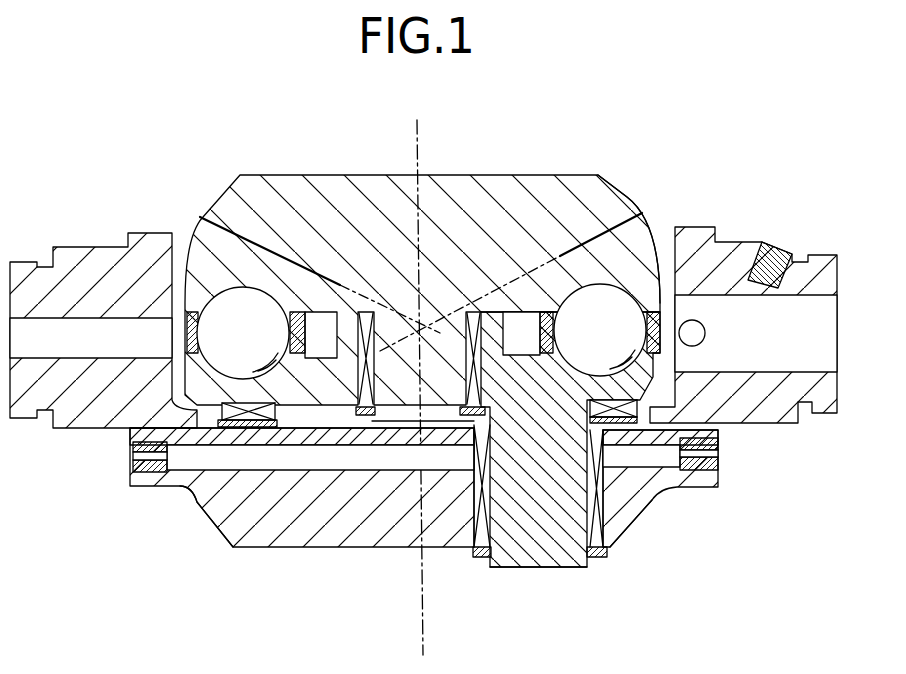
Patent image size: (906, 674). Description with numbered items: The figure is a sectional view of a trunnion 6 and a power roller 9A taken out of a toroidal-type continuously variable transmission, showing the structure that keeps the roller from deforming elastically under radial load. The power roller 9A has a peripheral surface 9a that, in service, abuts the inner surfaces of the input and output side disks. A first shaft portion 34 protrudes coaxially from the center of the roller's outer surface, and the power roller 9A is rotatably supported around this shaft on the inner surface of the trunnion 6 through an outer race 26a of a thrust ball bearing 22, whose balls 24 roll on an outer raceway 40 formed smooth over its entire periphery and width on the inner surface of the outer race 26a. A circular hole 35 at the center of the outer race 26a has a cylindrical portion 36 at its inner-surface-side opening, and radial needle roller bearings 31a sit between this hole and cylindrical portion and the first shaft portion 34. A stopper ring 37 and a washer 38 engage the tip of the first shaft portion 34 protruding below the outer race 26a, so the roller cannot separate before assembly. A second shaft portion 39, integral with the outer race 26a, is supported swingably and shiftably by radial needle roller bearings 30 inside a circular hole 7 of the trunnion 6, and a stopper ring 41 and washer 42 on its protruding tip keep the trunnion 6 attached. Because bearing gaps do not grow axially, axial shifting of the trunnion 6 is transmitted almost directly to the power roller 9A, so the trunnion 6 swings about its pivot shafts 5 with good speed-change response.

The pivot shaft 5 is at (78, 267).
The trunnion 6 is at (660, 494).
The circular hole 7 is at (588, 552).
The power roller 9A is at (273, 217).
The peripheral surface 9a is at (624, 192).
The thrust ball bearing 22 is at (212, 330).
The ball 24 is at (232, 330).
The outer race 26a is at (188, 490).
The radial needle roller bearing 30 is at (633, 510).
The radial needle roller bearing 31a is at (332, 395).
The first shaft portion 34 is at (421, 435).
The circular hole 35 is at (375, 318).
The cylindrical portion 36 is at (350, 313).
The stopper ring 37 is at (362, 445).
The washer 38 is at (455, 408).
The second shaft portion 39 is at (527, 565).
The outer raceway 40 is at (718, 427).
The stopper ring 41 is at (600, 558).
The washer 42 is at (612, 552).